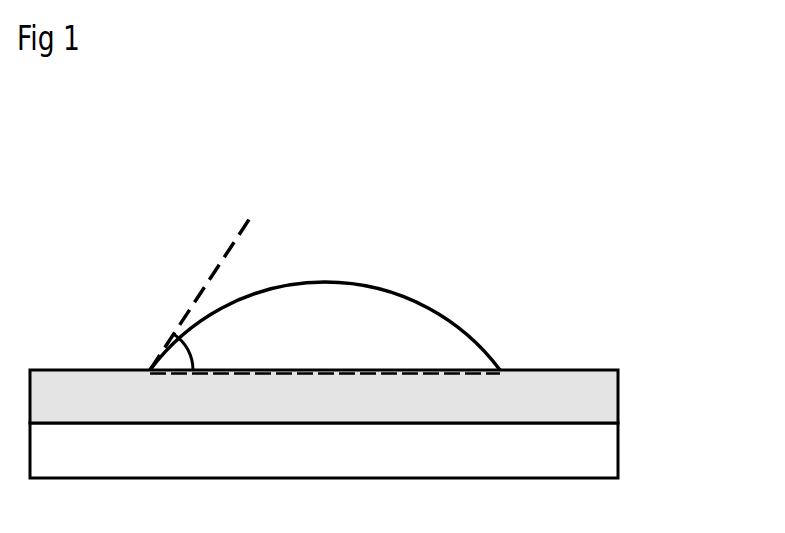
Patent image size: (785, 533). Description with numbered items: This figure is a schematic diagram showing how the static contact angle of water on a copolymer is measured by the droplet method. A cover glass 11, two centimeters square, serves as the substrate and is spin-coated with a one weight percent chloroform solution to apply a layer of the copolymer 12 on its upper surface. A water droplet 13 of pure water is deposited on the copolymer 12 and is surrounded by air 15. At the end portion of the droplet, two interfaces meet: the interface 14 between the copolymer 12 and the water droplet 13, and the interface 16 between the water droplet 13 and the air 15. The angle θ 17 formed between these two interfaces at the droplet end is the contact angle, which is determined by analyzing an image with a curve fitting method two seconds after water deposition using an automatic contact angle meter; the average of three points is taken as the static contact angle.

The cover glass 11 is at (618, 458).
The copolymer 12 is at (618, 397).
The water droplet 13 is at (455, 318).
The interface between copolymer and water droplet 14 is at (327, 370).
The air 15 is at (727, 130).
The interface between water droplet and air 16 is at (200, 282).
The angle θ 17 is at (193, 345).